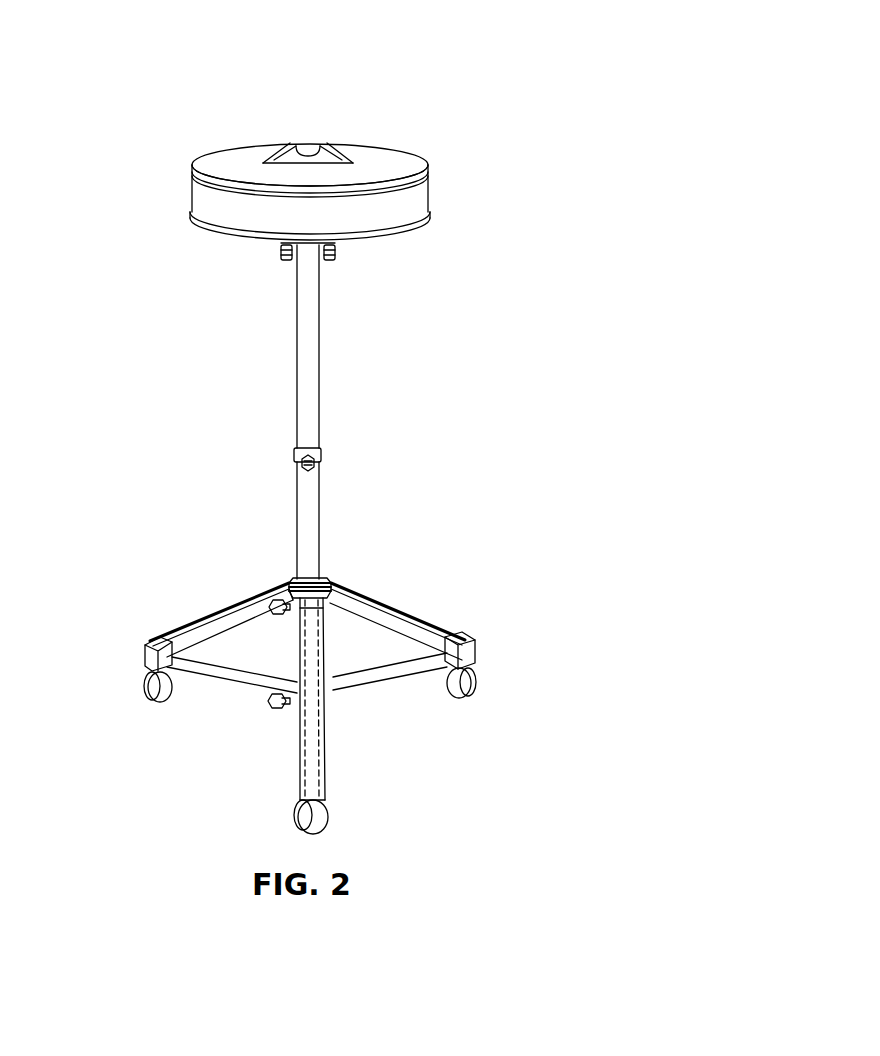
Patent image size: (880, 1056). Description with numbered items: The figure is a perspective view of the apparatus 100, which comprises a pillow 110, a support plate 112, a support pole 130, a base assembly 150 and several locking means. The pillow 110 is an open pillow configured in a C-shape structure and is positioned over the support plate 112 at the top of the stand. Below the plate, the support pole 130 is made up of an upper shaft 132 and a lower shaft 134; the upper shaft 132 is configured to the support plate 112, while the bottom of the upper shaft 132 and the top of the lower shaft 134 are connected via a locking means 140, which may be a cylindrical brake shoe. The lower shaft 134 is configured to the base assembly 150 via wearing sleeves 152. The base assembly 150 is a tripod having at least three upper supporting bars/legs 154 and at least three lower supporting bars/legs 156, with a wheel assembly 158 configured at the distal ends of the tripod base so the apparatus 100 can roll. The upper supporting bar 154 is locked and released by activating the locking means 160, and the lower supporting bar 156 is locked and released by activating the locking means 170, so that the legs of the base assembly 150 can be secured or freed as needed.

The apparatus 100 is at (414, 48).
The pillow 110 is at (376, 150).
The support plate 112 is at (414, 228).
The support pole 130 is at (398, 405).
The upper shaft 132 is at (312, 338).
The lower shaft 134 is at (312, 527).
The locking means 140 is at (318, 465).
The base assembly 150 is at (398, 585).
The wearing sleeves 152 is at (330, 613).
The upper supporting bars/legs 154 is at (230, 607).
The lower supporting bars/legs 156 is at (217, 668).
The wheel assembly 158 is at (145, 683).
The locking means 160 is at (273, 590).
The locking means 170 is at (272, 703).